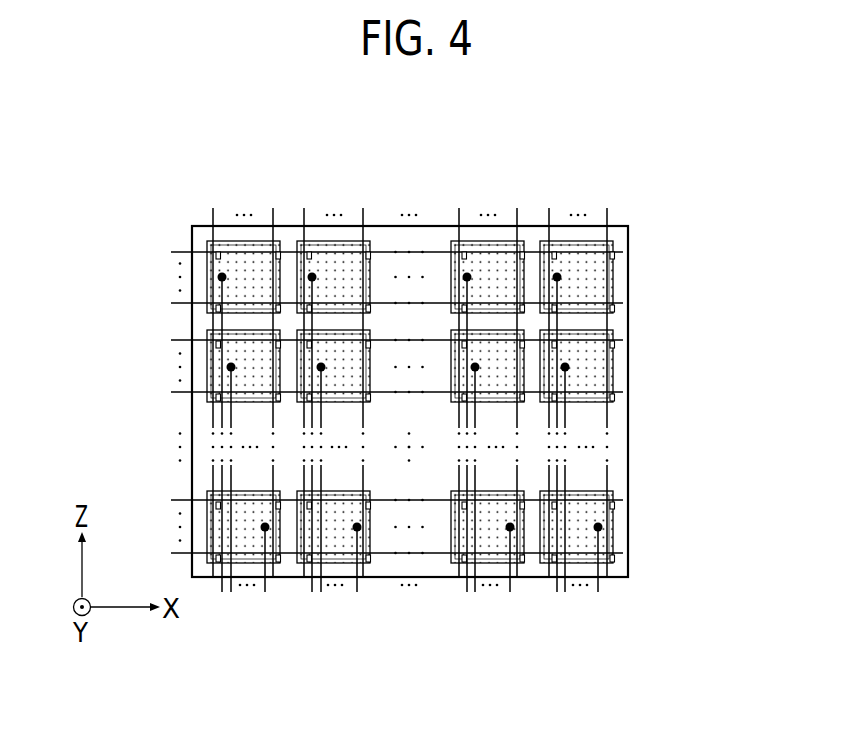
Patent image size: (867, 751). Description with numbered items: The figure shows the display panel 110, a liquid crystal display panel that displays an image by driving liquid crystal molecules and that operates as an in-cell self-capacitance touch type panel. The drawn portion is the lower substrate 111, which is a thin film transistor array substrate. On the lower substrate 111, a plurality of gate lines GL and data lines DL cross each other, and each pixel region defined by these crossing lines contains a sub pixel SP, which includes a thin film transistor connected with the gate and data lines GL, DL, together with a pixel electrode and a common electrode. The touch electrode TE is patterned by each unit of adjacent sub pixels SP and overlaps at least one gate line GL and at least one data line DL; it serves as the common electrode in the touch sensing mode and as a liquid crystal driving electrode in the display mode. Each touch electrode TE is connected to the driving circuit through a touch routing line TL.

The display panel 110 is at (180, 216).
The lower substrate 111 is at (629, 447).
The sub pixel SP is at (616, 256).
The touch electrode TE is at (615, 290).
The data line DL is at (607, 193).
The gate line GL is at (157, 252).
The touch routing line TL is at (600, 598).